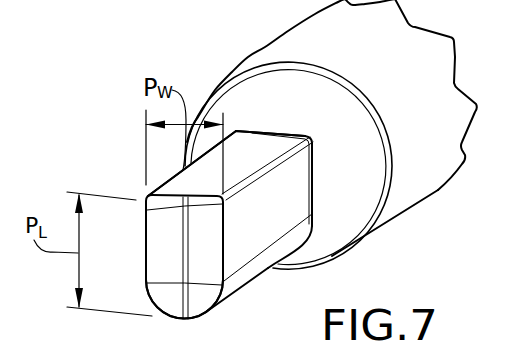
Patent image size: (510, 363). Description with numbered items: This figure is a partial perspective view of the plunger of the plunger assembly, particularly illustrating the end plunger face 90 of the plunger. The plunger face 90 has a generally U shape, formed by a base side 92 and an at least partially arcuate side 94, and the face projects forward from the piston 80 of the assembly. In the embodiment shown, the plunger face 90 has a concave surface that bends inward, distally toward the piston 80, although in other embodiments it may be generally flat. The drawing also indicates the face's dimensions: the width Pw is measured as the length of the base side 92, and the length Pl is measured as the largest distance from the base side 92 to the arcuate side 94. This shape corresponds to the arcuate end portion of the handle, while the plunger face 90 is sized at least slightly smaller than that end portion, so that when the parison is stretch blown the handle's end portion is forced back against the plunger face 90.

The piston 80 is at (295, 38).
The plunger face 90 is at (210, 250).
The base side 92 is at (177, 192).
The arcuate side 94 is at (204, 319).